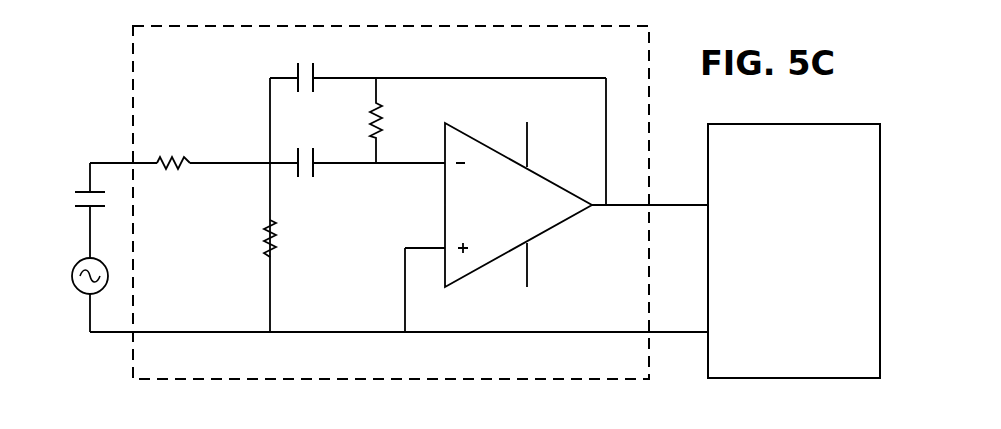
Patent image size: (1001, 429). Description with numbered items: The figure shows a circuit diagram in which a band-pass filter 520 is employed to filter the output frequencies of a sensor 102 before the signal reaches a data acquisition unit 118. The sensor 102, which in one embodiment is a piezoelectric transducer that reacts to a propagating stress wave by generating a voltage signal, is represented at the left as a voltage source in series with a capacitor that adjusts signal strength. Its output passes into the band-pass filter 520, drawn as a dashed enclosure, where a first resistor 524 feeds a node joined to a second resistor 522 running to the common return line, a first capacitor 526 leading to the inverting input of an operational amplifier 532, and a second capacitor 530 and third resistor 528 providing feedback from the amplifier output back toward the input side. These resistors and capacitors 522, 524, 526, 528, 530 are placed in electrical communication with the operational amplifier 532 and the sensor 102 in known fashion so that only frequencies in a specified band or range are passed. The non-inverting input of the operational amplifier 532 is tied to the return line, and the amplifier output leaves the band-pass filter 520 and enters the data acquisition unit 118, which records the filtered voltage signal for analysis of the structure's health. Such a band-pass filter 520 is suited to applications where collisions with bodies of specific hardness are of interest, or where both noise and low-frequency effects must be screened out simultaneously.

The sensor 102 is at (63, 247).
The data acquisition unit 118 is at (794, 251).
The band-pass filter 520 is at (391, 202).
The resistor 522 is at (283, 252).
The resistor 524 is at (163, 180).
The capacitor 526 is at (316, 172).
The resistor 528 is at (382, 140).
The capacitor 530 is at (294, 70).
The operational amplifier 532 is at (518, 204).